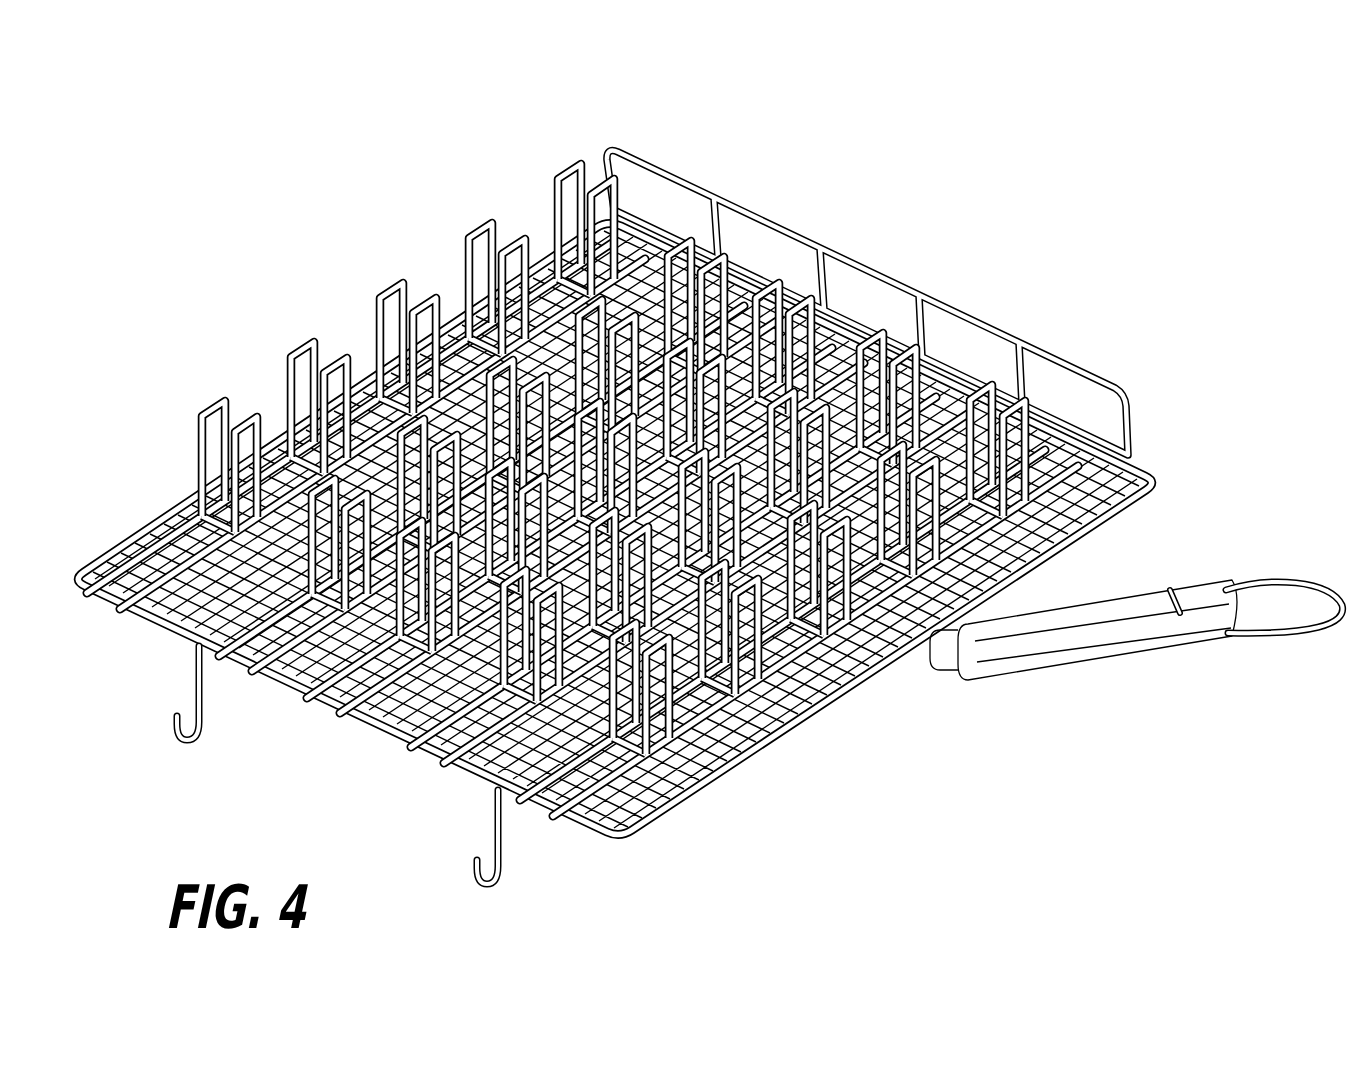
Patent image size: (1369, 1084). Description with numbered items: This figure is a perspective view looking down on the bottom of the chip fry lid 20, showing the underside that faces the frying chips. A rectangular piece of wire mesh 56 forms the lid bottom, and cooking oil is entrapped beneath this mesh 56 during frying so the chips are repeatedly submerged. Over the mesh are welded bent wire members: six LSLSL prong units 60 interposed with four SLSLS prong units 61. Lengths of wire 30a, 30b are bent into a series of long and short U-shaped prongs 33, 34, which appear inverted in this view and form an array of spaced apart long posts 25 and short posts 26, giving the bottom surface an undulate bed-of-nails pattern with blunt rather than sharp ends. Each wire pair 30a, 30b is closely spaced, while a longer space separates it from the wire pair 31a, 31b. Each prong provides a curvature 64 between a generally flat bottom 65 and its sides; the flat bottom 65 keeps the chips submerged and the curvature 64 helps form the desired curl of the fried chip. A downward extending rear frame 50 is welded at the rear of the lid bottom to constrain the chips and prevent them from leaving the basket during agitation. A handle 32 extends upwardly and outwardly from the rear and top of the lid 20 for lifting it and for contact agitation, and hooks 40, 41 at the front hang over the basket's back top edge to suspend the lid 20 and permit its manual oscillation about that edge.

The chip fry lid 20 is at (723, 510).
The long posts 25 is at (432, 302).
The short posts 26 is at (319, 368).
The wire 30a is at (553, 178).
The wire 30b is at (596, 193).
The wire 31a is at (690, 252).
The wire 31b is at (724, 270).
The handle 32 is at (1230, 585).
The long U-shaped prongs 33 is at (398, 290).
The short U-shaped prongs 34 is at (474, 236).
The hook 40 is at (203, 727).
The hook 41 is at (503, 873).
The rear frame 50 is at (702, 226).
The wire mesh 56 is at (143, 616).
The LSLSL prong unit 60 is at (690, 762).
The SLSLS prong unit 61 is at (277, 662).
The curvature 64 is at (237, 425).
The flat bottom 65 is at (204, 408).